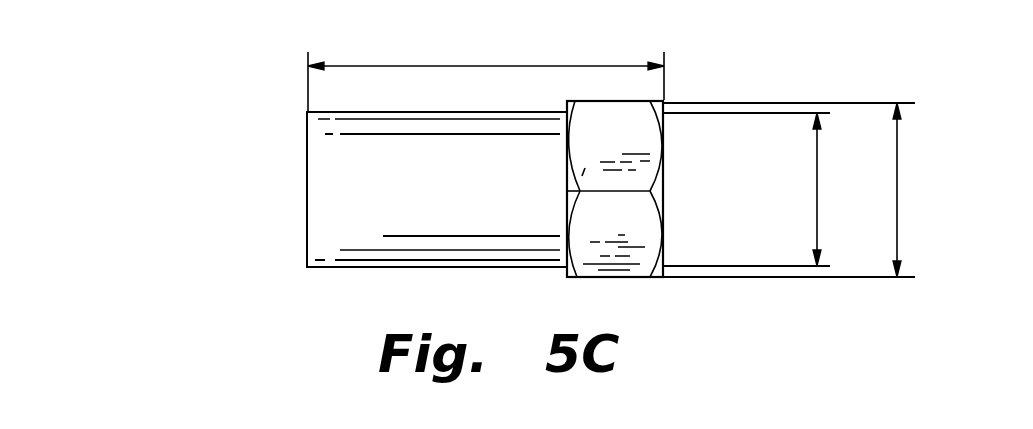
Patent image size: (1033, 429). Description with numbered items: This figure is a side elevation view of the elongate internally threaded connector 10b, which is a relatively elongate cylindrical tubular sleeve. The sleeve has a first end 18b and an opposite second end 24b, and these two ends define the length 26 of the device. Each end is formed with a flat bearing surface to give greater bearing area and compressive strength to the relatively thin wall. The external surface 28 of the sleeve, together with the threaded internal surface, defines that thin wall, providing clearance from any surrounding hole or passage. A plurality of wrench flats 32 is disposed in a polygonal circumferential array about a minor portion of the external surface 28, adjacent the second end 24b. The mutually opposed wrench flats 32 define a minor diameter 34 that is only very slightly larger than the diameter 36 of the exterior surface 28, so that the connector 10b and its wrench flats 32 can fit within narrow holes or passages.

The connector 10b is at (150, 187).
The external surface 28 is at (307, 157).
The first end 18b is at (307, 246).
The second end 24b is at (665, 185).
The wrench flats 32 is at (578, 168).
The length 26 is at (455, 66).
The diameter of the exterior surface 36 is at (817, 195).
The minor diameter 34 is at (897, 198).